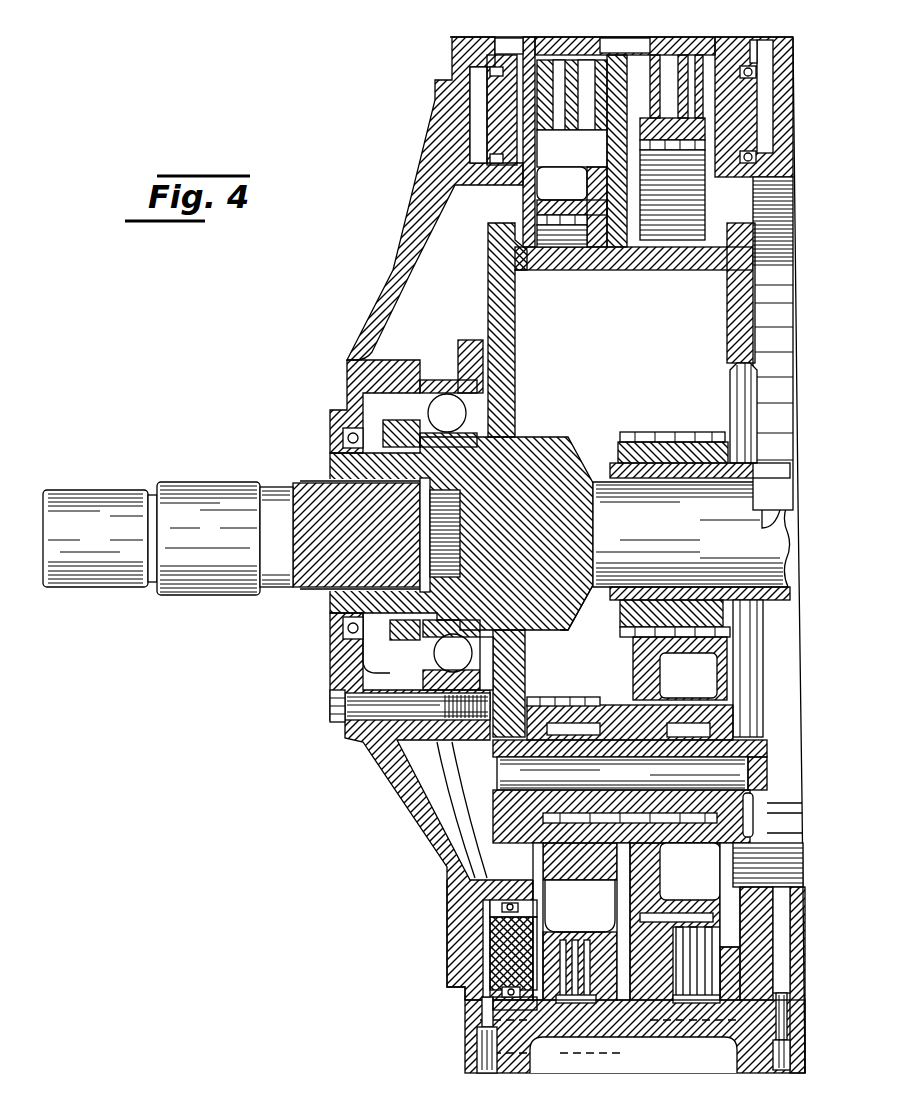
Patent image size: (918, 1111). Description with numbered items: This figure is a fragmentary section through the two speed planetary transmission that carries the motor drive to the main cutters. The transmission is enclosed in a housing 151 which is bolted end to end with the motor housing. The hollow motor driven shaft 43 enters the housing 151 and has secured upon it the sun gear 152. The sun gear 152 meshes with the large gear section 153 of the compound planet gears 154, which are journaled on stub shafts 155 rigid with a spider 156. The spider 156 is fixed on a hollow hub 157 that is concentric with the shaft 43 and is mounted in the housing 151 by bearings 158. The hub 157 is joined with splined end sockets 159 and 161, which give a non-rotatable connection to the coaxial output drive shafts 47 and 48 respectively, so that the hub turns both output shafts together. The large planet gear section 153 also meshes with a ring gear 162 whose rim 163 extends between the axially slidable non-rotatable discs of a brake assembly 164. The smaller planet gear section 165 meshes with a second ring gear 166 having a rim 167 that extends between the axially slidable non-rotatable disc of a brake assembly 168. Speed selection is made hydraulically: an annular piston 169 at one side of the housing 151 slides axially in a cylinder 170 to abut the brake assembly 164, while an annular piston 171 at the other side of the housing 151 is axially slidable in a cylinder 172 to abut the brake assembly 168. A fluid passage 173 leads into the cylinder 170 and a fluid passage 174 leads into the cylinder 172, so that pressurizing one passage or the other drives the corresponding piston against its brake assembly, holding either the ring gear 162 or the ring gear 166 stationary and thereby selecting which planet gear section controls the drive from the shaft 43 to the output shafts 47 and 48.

The hollow shaft 43 is at (754, 470).
The output drive shaft 47 is at (757, 578).
The output drive shaft 48 is at (226, 490).
The housing 151 is at (438, 862).
The sun gear 152 is at (704, 433).
The large gear section 153 is at (642, 673).
The compound planet gears 154 is at (650, 705).
The stub shafts 155 is at (497, 750).
The spider 156 is at (513, 668).
The hollow hub 157 is at (566, 612).
The bearings 158 is at (440, 656).
The splined end socket 159 is at (516, 582).
The splined end socket 161 is at (340, 586).
The ring gear 162 is at (683, 905).
The rim 163 is at (680, 968).
The brake assembly 164 is at (695, 992).
The planet gear section 165 is at (563, 832).
The ring gear 166 is at (608, 884).
The rim 167 is at (603, 990).
The brake assembly 168 is at (572, 950).
The annular piston 169 is at (795, 910).
The cylinder 170 is at (783, 950).
The annular piston 171 is at (503, 938).
The cylinder 172 is at (483, 985).
The fluid passage 173 is at (792, 1058).
The fluid passage 174 is at (490, 1073).